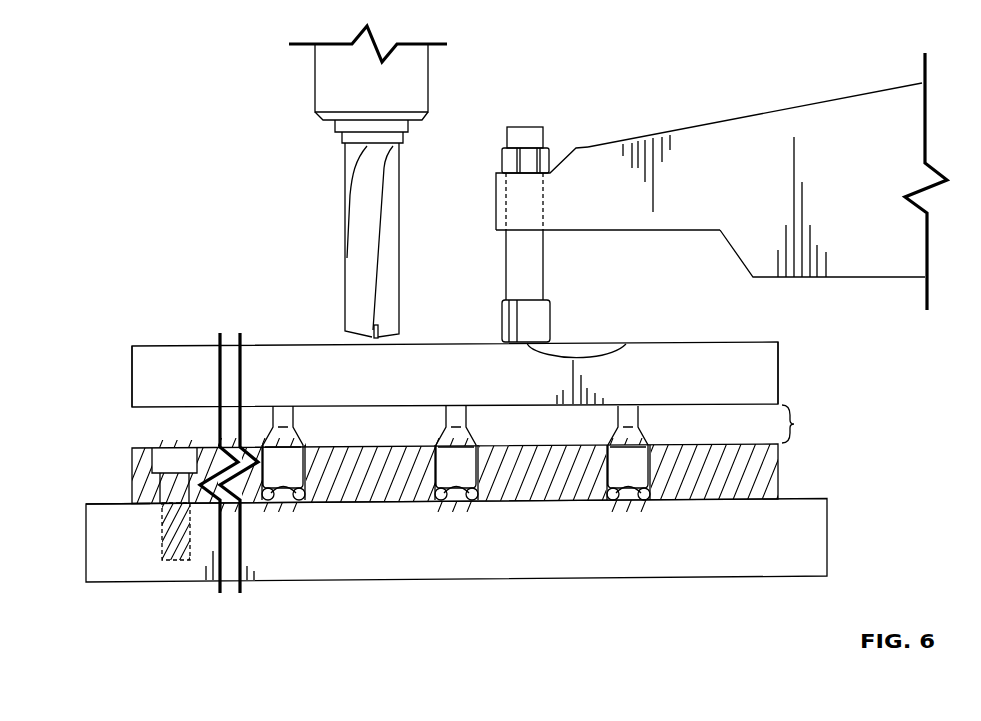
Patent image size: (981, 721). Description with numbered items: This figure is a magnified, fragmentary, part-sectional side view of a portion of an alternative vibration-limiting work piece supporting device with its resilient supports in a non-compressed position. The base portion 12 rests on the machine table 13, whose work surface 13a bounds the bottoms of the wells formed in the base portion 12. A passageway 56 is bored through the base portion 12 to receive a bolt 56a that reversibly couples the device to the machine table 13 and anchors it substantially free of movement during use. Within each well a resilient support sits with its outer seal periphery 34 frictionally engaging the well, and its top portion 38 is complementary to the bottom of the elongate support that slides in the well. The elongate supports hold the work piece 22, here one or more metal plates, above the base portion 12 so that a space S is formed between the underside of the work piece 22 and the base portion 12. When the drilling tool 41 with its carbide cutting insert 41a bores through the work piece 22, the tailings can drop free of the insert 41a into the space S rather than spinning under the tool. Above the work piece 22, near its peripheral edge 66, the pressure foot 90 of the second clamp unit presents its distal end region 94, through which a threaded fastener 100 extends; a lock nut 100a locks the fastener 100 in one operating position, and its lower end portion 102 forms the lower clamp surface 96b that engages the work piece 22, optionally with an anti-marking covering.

The base portion 12 is at (132, 473).
The machine table 13 is at (817, 555).
The work surface 13a is at (105, 503).
The work piece 22 is at (690, 353).
The outer seal periphery 34 is at (306, 494).
The top portion of the resilient support 38 is at (276, 488).
The drilling tool 41 is at (347, 230).
The carbide cutting insert 41a is at (373, 333).
The passageway 56 is at (175, 542).
The bolt 56a is at (180, 455).
The peripheral edge 66 is at (132, 387).
The pressure foot 90 is at (775, 137).
The distal end region 94 is at (495, 185).
The lower clamp surface 96b is at (625, 345).
The threaded fastener 100 is at (518, 268).
The lock nut 100a is at (551, 158).
The lower end portion 102 is at (543, 325).
The space S is at (795, 424).